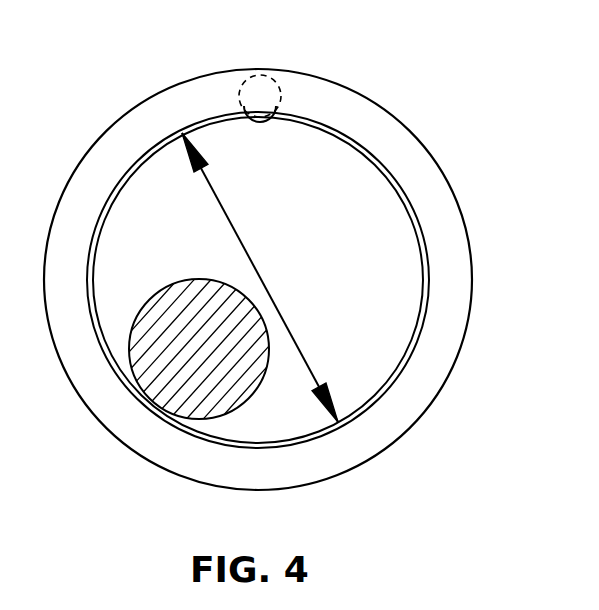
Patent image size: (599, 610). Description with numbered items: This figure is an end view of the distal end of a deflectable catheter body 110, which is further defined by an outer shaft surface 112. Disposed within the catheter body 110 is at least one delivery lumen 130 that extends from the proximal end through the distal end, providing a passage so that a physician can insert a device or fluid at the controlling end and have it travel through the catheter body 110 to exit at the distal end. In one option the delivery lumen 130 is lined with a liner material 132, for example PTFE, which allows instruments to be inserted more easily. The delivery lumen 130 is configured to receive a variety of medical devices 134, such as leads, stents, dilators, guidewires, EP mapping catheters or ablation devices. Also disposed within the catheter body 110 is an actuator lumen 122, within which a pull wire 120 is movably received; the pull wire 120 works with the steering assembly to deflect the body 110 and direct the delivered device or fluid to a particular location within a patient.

The catheter body 110 is at (422, 136).
The outer shaft surface 112 is at (466, 207).
The pull wire 120 is at (258, 100).
The actuator lumen 122 is at (268, 100).
The delivery lumen 130 is at (182, 133).
The liner material 132 is at (420, 345).
The medical device 134 is at (148, 390).